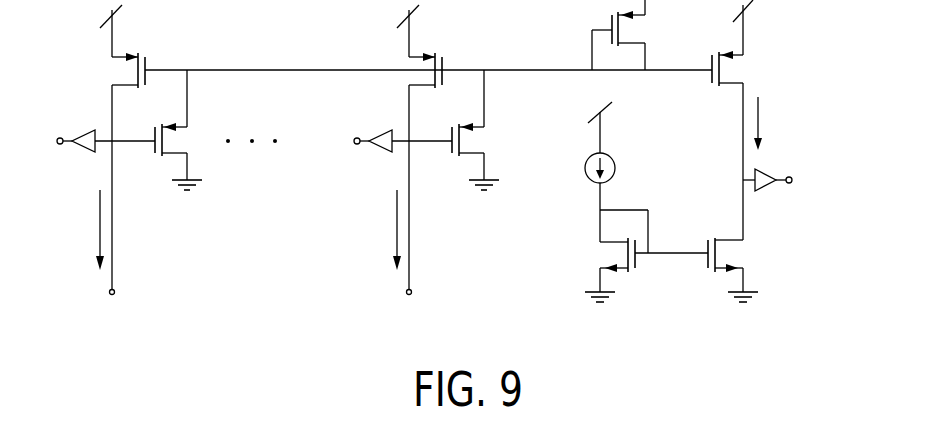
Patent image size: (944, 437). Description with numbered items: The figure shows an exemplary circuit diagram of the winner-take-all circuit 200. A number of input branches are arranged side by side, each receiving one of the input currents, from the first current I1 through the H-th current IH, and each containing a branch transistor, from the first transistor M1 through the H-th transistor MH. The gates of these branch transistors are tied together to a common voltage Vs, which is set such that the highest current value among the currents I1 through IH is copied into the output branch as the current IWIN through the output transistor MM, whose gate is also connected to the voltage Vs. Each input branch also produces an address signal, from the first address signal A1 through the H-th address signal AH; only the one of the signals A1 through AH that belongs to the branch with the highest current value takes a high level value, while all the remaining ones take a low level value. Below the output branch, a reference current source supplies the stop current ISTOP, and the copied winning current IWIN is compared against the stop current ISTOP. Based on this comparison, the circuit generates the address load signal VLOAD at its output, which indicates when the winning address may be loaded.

The WTA circuit 200 is at (233, 321).
The transistor M1 is at (135, 150).
The transistor MH is at (434, 150).
The transistor MM is at (751, 120).
The voltage Vs VS is at (428, 55).
The signal A1 is at (91, 141).
The signal AH is at (388, 141).
The current I1 is at (90, 230).
The current IH is at (386, 230).
The ISTOP current ISTOP is at (627, 156).
The current IWIN,H IWIN is at (788, 123).
The address load signal VLOAD,H VLOAD is at (806, 180).